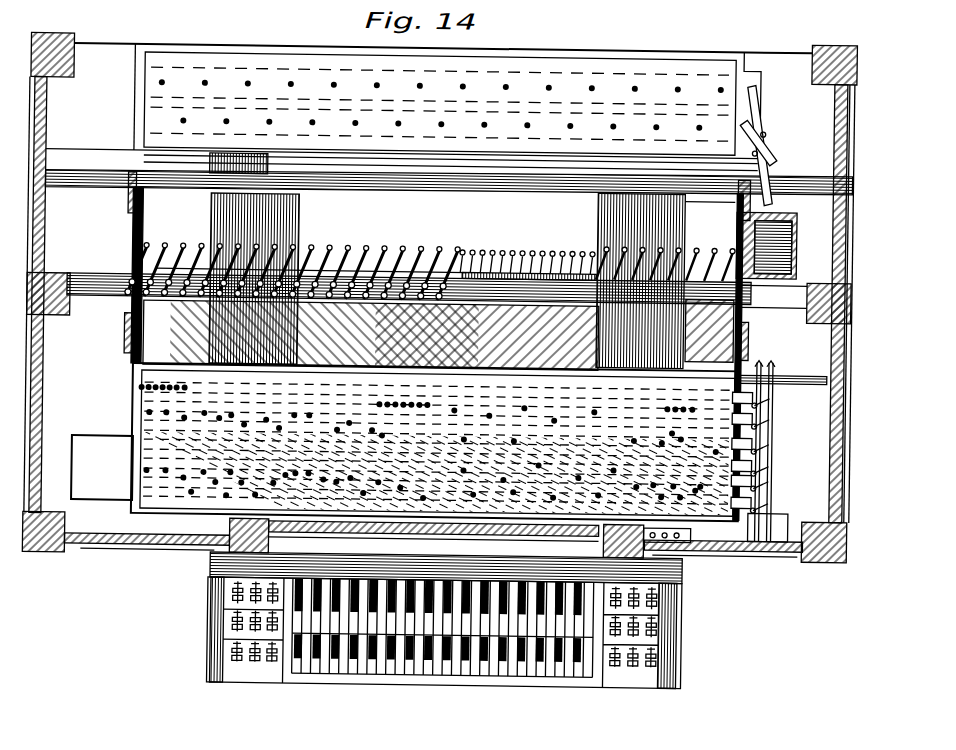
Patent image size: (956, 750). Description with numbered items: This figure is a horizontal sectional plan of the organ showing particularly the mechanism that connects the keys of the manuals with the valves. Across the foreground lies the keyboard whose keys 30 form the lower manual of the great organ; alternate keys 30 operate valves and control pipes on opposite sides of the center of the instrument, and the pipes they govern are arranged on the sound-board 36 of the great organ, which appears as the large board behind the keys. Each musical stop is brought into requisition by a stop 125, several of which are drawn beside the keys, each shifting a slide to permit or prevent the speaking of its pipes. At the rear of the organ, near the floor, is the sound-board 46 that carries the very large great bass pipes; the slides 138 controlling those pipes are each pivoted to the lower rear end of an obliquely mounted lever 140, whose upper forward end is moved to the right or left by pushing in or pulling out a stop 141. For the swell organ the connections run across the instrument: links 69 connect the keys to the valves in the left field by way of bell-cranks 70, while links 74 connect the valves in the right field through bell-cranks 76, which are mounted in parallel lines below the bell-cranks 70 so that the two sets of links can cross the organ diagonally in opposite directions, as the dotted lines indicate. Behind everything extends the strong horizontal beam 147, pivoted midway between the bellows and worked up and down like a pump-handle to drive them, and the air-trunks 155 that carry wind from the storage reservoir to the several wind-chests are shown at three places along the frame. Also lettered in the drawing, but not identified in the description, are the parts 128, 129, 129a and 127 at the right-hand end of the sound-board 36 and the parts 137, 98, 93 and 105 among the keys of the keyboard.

The sound-board 46 is at (440, 103).
The horizontal beam 147 is at (560, 164).
The air-trunks 155 is at (212, 159).
The slides 138 is at (758, 90).
The obliquely mounted lever 140 is at (766, 130).
The bell-cranks 70 is at (214, 246).
The bell-cranks 76 is at (550, 250).
The links 69 is at (214, 325).
The links 74 is at (686, 330).
The rods 128 is at (776, 354).
The sound-board 36 is at (310, 398).
The tappet 137 is at (572, 626).
The key levers 129a is at (738, 392).
The connecting link 129 is at (763, 420).
The rod 127 is at (763, 470).
The stop 125 is at (280, 578).
The key frame 98 is at (233, 646).
The key 93 is at (237, 670).
The key 105 is at (274, 670).
The stop 141 is at (625, 679).
The keys 30 is at (458, 684).